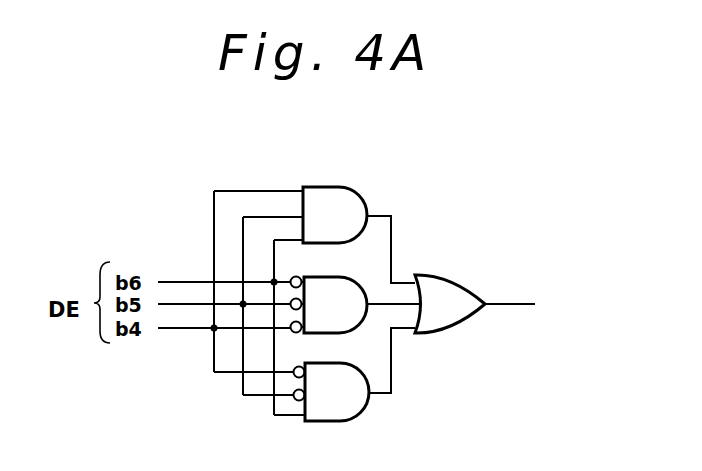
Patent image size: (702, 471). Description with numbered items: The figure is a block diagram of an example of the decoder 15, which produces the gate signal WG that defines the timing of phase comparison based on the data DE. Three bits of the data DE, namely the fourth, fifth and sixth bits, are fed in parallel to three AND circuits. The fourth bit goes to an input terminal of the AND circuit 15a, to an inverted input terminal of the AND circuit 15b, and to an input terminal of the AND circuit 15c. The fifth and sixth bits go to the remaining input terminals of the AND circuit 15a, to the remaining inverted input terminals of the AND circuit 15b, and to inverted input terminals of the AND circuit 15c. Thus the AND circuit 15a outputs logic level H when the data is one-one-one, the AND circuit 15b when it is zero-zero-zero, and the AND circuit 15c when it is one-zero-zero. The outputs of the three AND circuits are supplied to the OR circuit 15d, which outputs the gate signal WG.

The decoder 15 is at (481, 222).
The AND circuit 15a is at (339, 186).
The AND circuit 15b is at (318, 277).
The AND circuit 15c is at (346, 423).
The OR circuit 15d is at (451, 276).